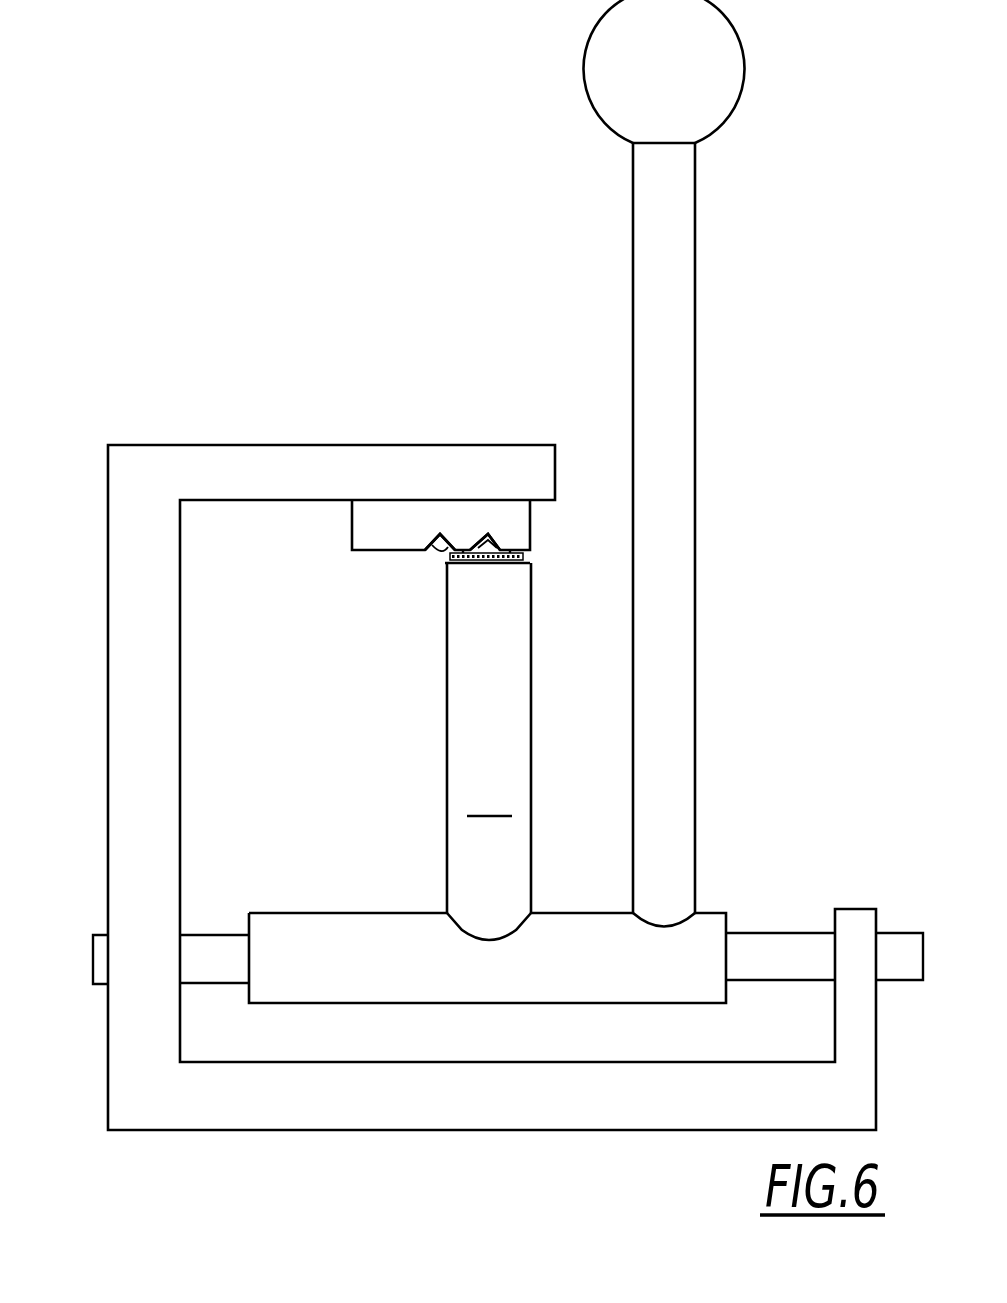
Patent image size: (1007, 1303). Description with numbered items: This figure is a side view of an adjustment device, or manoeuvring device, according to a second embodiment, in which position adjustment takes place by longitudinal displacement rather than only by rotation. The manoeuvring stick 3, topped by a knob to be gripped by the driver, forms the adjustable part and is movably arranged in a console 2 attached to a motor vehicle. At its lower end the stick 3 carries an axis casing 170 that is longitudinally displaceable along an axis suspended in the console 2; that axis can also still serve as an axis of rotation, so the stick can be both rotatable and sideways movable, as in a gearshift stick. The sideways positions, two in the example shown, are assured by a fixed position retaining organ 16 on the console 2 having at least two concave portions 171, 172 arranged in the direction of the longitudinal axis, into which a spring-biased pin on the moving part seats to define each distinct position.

The console 2 is at (103, 842).
The manoeuvring stick 3 is at (675, 632).
The guiding surface 16 is at (417, 572).
The axis casing 170 is at (710, 929).
The concave portion 171 is at (473, 545).
The concave portion 172 is at (428, 541).